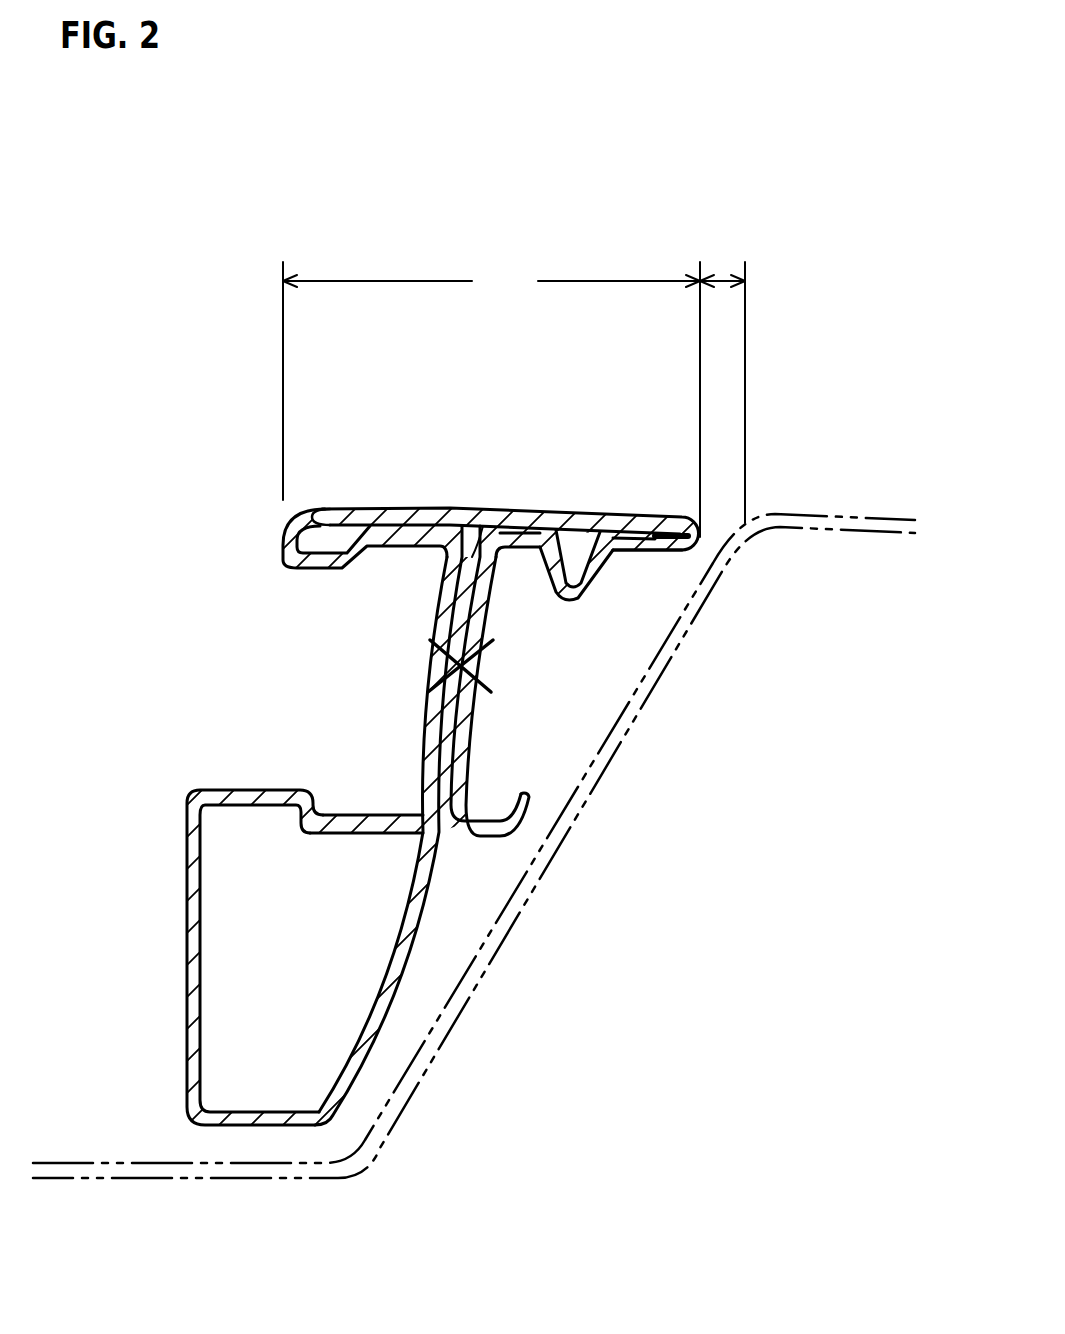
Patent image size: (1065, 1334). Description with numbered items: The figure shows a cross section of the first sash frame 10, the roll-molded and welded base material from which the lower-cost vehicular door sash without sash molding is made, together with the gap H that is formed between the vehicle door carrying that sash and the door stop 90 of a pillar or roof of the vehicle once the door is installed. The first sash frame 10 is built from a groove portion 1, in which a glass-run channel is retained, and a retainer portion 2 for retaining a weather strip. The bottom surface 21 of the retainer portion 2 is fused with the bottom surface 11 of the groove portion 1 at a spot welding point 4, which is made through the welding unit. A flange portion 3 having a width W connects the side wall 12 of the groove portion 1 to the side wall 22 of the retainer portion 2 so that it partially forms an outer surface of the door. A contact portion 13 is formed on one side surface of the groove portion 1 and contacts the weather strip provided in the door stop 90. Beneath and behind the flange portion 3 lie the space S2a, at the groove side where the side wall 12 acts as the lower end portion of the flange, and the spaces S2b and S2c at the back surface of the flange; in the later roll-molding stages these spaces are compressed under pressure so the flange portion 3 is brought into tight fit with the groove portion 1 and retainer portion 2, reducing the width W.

The groove portion 1 is at (322, 698).
The retainer portion 2 is at (555, 717).
The flange portion 3 is at (428, 504).
The spot welding point 4 is at (490, 683).
The first sash frame 10 is at (238, 317).
The bottom surface of the groove portion 11 is at (427, 763).
The side wall of the groove portion 12 is at (325, 570).
The contact portion 13 is at (185, 1062).
The bottom surface of the retainer portion 21 is at (495, 615).
The side wall of the retainer portion 22 is at (658, 560).
The door stop 90 is at (400, 1097).
The space S2a is at (337, 538).
The space S2b is at (487, 542).
The space S2c is at (583, 545).
The width of the flange portion W is at (491, 396).
The gap H is at (722, 274).